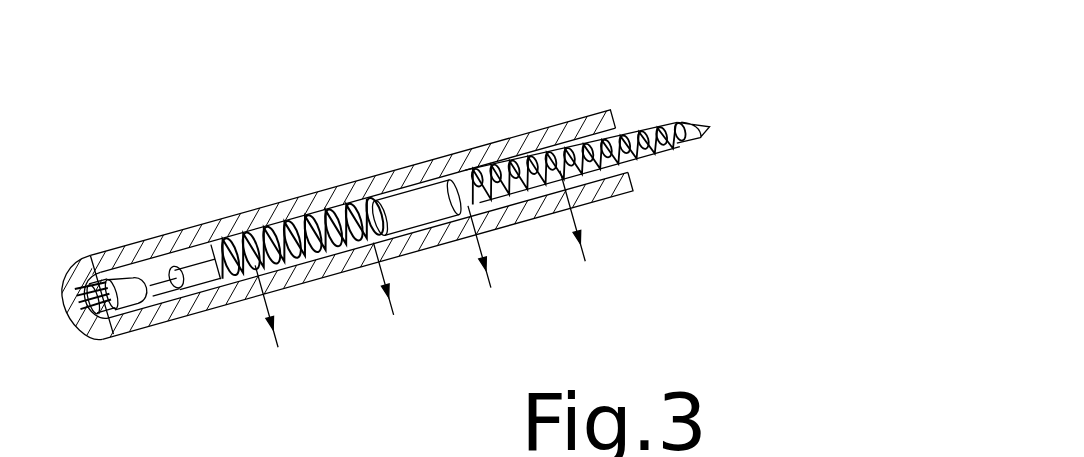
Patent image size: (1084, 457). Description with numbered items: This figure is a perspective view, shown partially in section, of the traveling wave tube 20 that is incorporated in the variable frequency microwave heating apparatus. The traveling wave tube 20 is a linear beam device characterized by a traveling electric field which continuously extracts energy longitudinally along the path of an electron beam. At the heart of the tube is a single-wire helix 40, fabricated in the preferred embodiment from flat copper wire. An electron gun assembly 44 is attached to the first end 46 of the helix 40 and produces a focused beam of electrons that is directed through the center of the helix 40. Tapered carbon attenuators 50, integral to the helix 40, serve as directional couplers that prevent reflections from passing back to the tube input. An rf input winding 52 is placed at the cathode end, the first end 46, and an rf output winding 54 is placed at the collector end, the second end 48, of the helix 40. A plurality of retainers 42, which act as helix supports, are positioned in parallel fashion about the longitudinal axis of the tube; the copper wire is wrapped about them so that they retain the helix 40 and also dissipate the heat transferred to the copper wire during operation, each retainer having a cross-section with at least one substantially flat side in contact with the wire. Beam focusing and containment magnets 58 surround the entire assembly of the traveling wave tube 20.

The traveling wave tube 20 is at (147, 143).
The single-wire helix 40 is at (460, 168).
The retainers 42 is at (520, 177).
The electron gun assembly 44 is at (165, 232).
The first end 46 is at (362, 205).
The second end 48 is at (655, 125).
The tapered carbon attenuators 50 is at (413, 217).
The rf input winding 52 is at (267, 308).
The rf output winding 54 is at (573, 222).
The beam focusing and containment magnets 58 is at (294, 188).